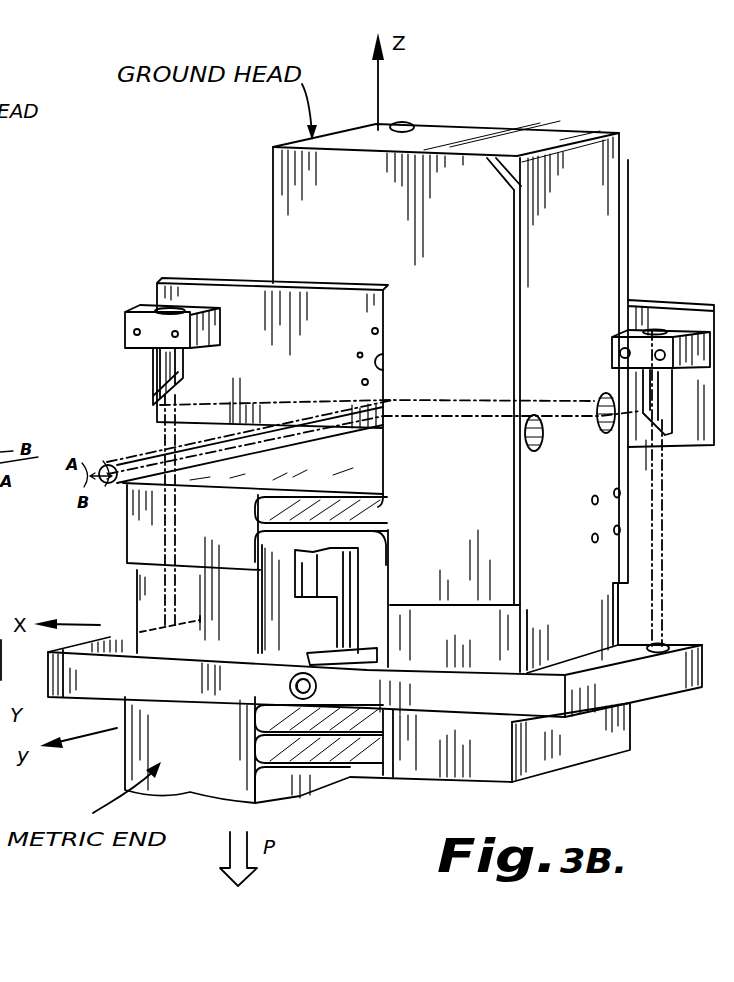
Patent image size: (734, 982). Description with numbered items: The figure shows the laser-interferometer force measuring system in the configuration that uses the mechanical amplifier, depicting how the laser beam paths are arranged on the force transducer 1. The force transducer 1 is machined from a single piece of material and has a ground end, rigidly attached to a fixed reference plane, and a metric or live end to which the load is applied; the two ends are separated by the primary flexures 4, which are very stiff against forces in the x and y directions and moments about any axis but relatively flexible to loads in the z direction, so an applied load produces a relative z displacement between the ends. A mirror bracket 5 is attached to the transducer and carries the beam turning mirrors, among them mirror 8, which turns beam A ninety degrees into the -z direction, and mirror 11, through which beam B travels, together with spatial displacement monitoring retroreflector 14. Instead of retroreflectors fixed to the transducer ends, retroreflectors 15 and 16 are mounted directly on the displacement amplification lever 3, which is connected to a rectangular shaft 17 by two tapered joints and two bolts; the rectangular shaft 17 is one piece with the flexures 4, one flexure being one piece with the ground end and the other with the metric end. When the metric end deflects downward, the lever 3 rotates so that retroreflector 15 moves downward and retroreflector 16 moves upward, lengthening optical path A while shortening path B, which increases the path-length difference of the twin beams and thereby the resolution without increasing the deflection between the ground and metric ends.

The force transducer 1 is at (283, 169).
The displacement amplification lever 3 is at (655, 690).
The primary flexures 4 is at (265, 547).
The mirror bracket 5 is at (235, 305).
The beam turning mirror 8 is at (165, 373).
The beam turning mirror 11 is at (668, 398).
The spatial displacement monitoring retroreflector 14 is at (378, 358).
The retroreflector 15 is at (155, 618).
The retroreflector 16 is at (665, 642).
The rectangular shaft 17 is at (362, 642).